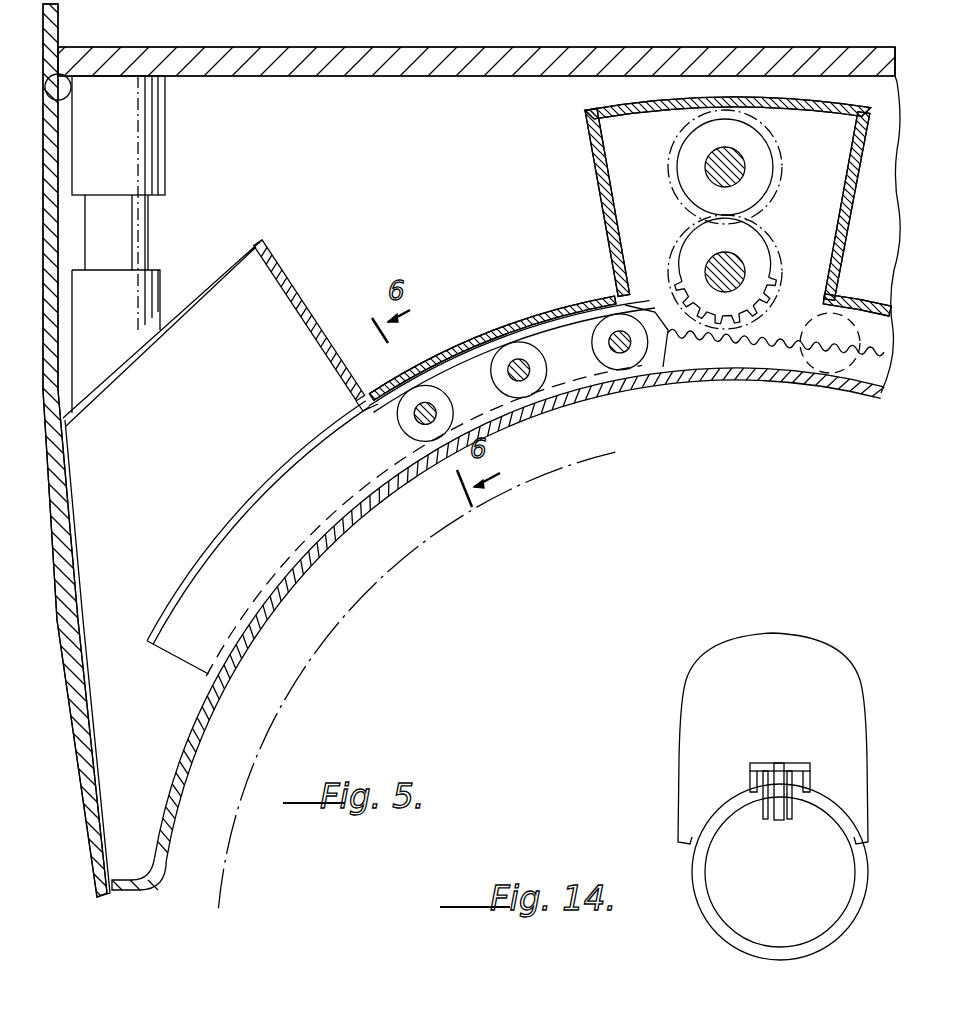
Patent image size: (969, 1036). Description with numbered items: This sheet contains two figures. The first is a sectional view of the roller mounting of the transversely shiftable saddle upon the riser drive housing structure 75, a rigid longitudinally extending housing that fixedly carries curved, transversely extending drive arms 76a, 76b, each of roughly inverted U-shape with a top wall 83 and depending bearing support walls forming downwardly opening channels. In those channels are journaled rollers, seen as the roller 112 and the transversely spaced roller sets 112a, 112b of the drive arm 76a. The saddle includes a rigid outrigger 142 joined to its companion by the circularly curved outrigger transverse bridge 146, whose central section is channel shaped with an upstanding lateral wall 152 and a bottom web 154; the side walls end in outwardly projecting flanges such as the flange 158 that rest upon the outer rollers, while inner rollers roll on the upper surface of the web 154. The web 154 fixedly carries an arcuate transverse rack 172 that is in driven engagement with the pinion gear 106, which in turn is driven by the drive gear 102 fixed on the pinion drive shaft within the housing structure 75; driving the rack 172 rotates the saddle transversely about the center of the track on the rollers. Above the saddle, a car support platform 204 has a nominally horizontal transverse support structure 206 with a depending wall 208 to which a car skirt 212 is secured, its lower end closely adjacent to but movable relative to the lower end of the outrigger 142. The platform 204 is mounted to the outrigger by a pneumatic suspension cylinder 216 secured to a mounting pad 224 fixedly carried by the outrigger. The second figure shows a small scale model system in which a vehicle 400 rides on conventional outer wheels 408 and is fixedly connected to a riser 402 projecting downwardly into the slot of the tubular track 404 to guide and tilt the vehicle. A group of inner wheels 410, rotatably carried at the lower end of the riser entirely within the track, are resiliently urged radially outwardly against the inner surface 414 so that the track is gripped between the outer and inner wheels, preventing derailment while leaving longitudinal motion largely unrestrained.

In FIG. 5, the car support platform 204 is at (566, 30).
In FIG. 5, the transverse support structure 206 is at (338, 47).
In FIG. 5, the depending wall 208 is at (60, 32).
In FIG. 5, the car skirt 212 is at (76, 716).
In FIG. 5, the pneumatic suspension cylinder 216 is at (166, 145).
In FIG. 5, the mounting pad 224 is at (162, 275).
In FIG. 5, the outrigger 142 is at (268, 236).
In FIG. 5, the lateral wall 152 is at (345, 428).
In FIG. 5, the bottom web 154 is at (528, 415).
In FIG. 5, the outrigger transverse bridge 146 is at (628, 428).
In FIG. 5, the drive arm 76a is at (452, 290).
In FIG. 5, the drive arm 76b is at (876, 300).
In FIG. 5, the flange 158 is at (450, 352).
In FIG. 5, the top wall 83 is at (565, 305).
In FIG. 5, the roller 112 is at (430, 440).
In FIG. 5, the roller set 112a is at (538, 385).
In FIG. 5, the roller set 112b is at (640, 360).
In FIG. 5, the riser drive housing structure 75 is at (590, 200).
In FIG. 5, the drive gear 102 is at (768, 172).
In FIG. 5, the pinion gear 106 is at (755, 265).
In FIG. 5, the transverse rack 172 is at (768, 356).
In FIG. 14, the vehicle 400 is at (690, 684).
In FIG. 14, the riser 402 is at (787, 770).
In FIG. 14, the track 404 is at (722, 925).
In FIG. 14, the outer wheel 408 is at (752, 775).
In FIG. 14, the inner wheel 410 is at (760, 818).
In FIG. 14, the inner surface 414 is at (718, 898).